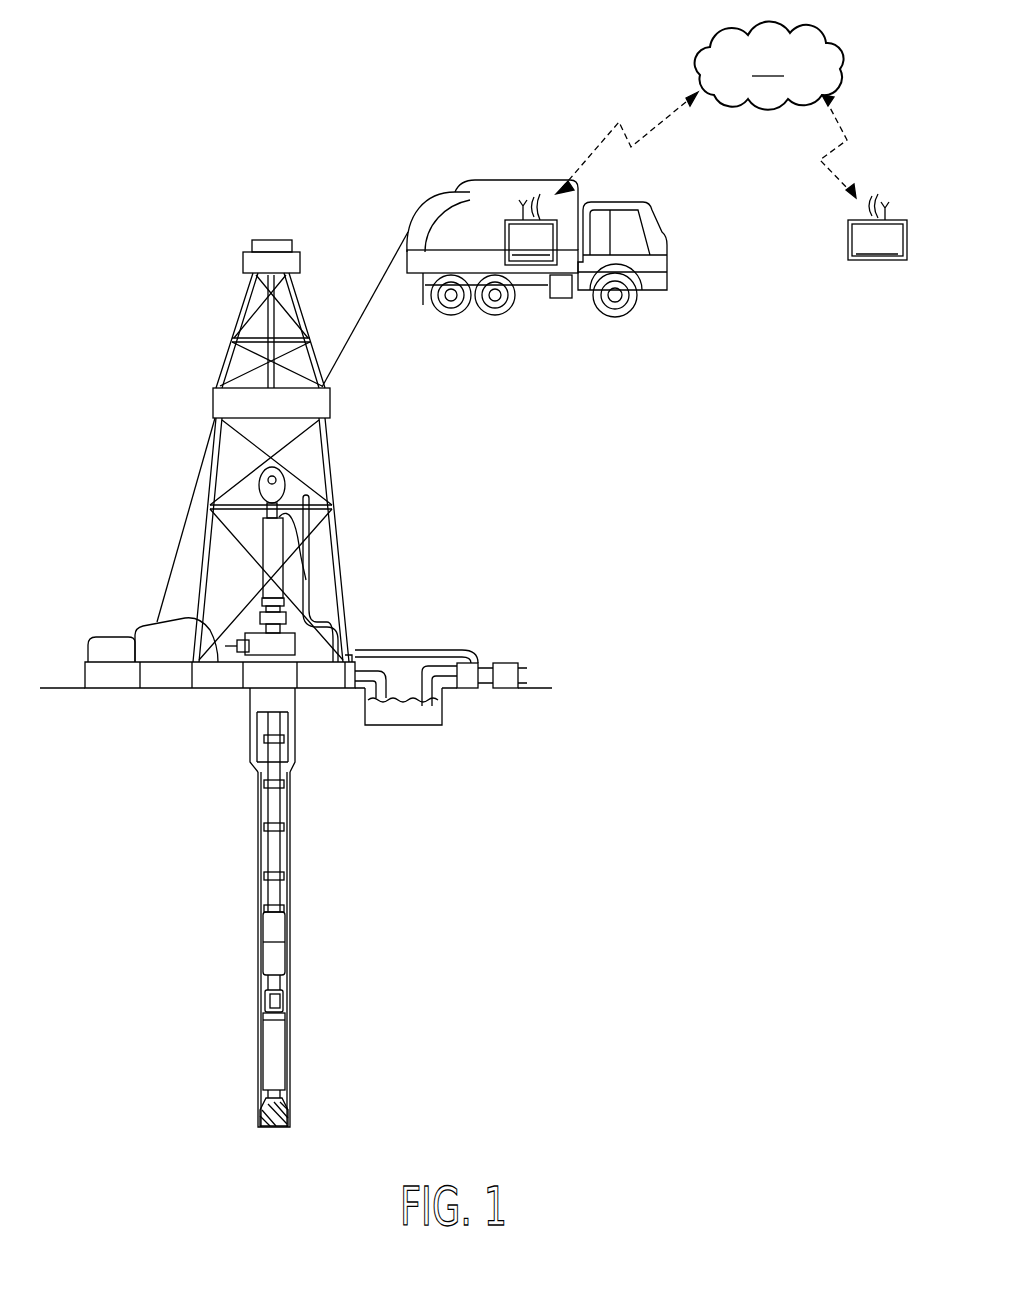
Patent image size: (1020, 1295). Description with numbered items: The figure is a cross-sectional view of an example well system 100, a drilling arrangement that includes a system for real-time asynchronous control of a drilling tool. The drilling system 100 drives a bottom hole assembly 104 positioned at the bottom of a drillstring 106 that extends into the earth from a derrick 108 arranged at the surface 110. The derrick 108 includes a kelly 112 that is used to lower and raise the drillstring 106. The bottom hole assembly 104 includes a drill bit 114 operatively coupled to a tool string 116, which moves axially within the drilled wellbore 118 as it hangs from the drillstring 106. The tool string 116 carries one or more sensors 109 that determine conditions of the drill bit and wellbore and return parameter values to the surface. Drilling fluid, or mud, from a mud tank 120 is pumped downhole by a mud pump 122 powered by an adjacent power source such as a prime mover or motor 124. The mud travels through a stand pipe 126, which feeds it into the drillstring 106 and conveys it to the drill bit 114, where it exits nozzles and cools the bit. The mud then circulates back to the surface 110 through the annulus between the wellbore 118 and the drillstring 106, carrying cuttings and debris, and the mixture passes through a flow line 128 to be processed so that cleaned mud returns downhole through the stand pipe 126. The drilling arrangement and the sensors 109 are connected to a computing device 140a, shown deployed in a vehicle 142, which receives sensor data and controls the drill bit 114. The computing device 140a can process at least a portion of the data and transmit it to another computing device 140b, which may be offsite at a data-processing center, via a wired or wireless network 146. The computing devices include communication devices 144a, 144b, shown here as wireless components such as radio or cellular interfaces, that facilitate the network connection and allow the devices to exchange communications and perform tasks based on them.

The well system 100 is at (522, 455).
The bottom hole assembly 104 is at (207, 944).
The drillstring 106 is at (275, 848).
The derrick 108 is at (216, 468).
The sensors 109 is at (280, 1000).
The surface 110 is at (53, 687).
The kelly 112 is at (280, 481).
The drill bit 114 is at (283, 1118).
The tool string 116 is at (273, 1058).
The wellbore 118 is at (259, 810).
The mud tank 120 is at (408, 717).
The mud pump 122 is at (475, 665).
The motor 124 is at (512, 673).
The stand pipe 126 is at (309, 573).
The flow line 128 is at (380, 668).
The computing device 140a is at (531, 232).
The computing device 140b is at (877, 231).
The vehicle 142 is at (666, 280).
The communication device 144a is at (538, 198).
The communication device 144b is at (880, 195).
The network 146 is at (706, 110).